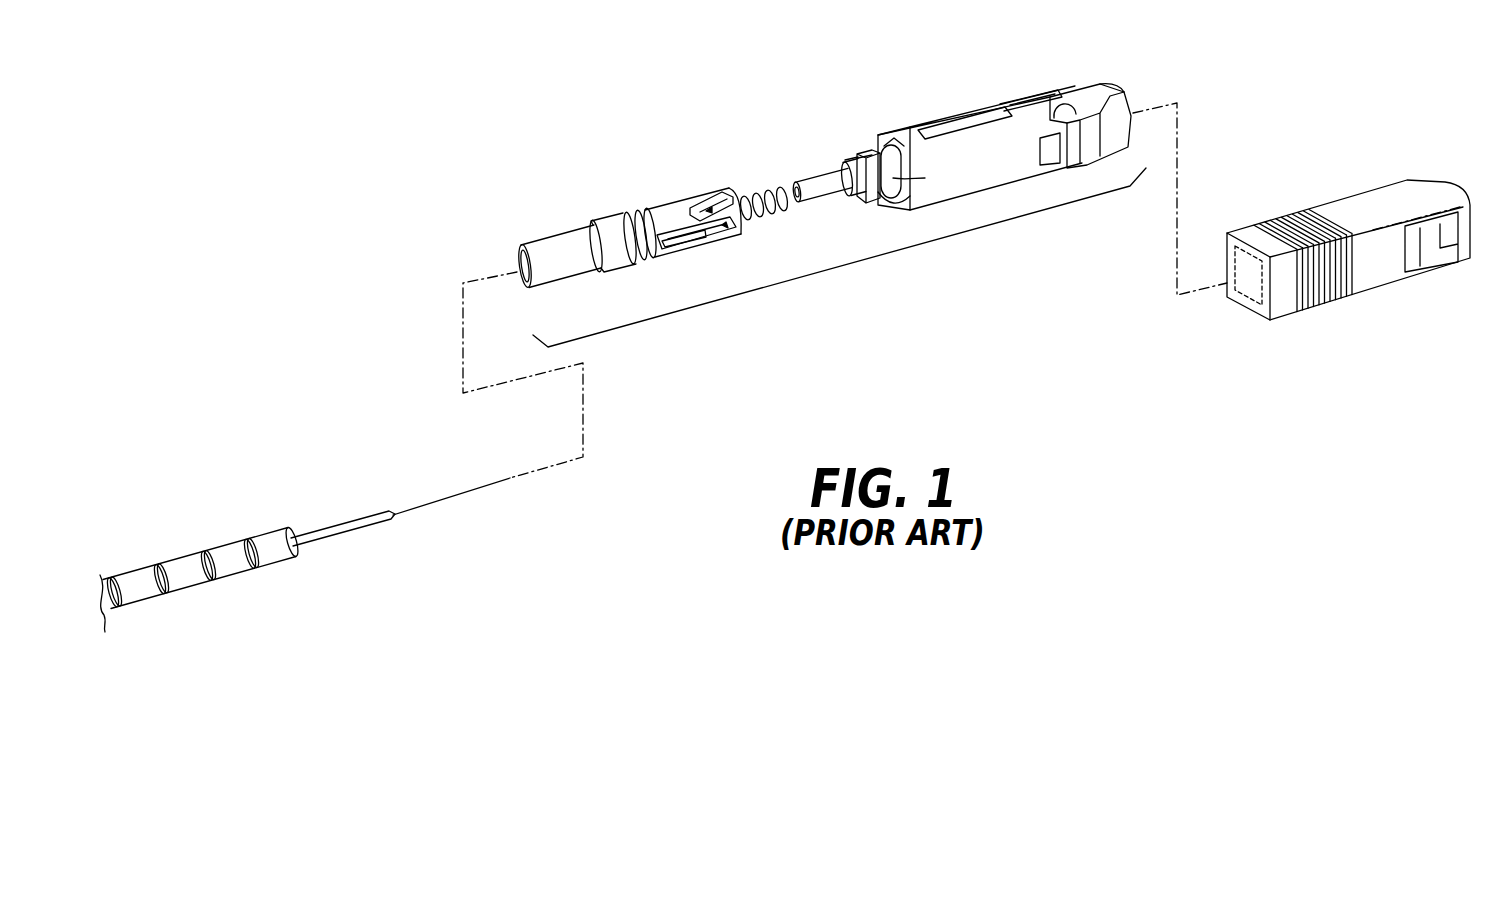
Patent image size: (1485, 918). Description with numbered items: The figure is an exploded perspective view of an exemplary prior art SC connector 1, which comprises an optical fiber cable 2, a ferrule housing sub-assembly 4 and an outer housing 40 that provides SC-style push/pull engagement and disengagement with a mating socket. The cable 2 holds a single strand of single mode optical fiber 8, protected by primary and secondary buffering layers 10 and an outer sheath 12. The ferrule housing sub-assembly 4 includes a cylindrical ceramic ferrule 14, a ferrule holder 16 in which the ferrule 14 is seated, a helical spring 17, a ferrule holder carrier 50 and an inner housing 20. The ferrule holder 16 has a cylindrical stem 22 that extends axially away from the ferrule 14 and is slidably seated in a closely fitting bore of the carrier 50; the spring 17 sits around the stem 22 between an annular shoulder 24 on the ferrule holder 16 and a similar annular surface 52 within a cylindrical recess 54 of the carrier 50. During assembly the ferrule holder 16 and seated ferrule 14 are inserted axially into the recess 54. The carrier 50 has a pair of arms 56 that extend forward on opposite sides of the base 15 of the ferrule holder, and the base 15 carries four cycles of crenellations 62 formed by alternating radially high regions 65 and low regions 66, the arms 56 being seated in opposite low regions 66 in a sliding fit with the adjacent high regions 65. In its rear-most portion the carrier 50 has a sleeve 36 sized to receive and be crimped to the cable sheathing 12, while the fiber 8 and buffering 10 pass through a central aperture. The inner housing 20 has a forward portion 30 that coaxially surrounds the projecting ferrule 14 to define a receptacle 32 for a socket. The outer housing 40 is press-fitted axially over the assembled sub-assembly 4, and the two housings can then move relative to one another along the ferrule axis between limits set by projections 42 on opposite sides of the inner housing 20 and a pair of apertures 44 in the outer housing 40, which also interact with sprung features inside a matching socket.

The SC connector 1 is at (606, 97).
The optical fiber cable 2 is at (222, 538).
The ferrule housing sub-assembly 4 is at (876, 265).
The optical fiber 8 is at (462, 510).
The primary and secondary buffering layers 10 is at (357, 543).
The outer sheath 12 is at (238, 582).
The ferrule 14 is at (893, 170).
The base 15 is at (888, 188).
The ferrule holder 16 is at (845, 162).
The helical spring 17 is at (758, 198).
The inner housing 20 is at (960, 110).
The cylindrical stem 22 is at (812, 197).
The annular shoulder 24 is at (852, 200).
The forward portion 30 is at (1097, 93).
The receptacle 32 is at (1132, 96).
The sleeve 36 is at (565, 272).
The outer housing 40 is at (1375, 198).
The projections 42 is at (1050, 152).
The apertures 44 is at (1420, 250).
The ferrule holder carrier 50 is at (660, 208).
The annular surface 52 is at (665, 248).
The cylindrical recess 54 is at (740, 214).
The arms 56 is at (712, 195).
The crenellations 62 is at (848, 160).
The radially high regions 65 is at (870, 164).
The radially low regions 66 is at (925, 178).